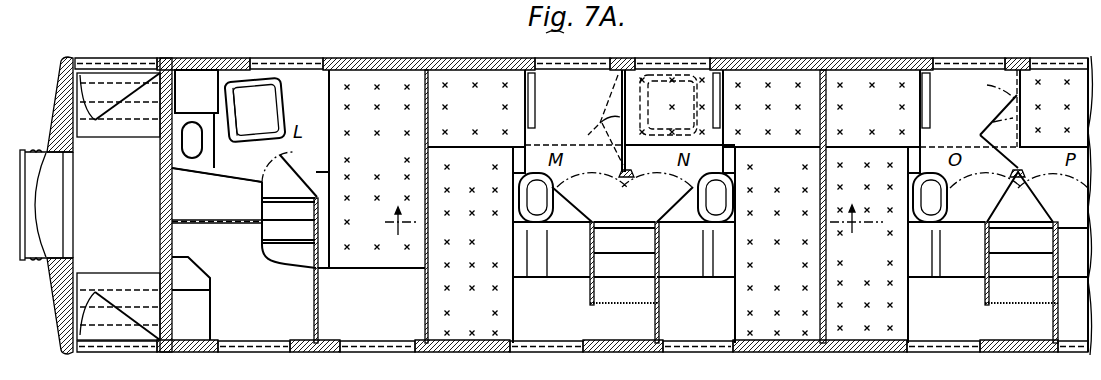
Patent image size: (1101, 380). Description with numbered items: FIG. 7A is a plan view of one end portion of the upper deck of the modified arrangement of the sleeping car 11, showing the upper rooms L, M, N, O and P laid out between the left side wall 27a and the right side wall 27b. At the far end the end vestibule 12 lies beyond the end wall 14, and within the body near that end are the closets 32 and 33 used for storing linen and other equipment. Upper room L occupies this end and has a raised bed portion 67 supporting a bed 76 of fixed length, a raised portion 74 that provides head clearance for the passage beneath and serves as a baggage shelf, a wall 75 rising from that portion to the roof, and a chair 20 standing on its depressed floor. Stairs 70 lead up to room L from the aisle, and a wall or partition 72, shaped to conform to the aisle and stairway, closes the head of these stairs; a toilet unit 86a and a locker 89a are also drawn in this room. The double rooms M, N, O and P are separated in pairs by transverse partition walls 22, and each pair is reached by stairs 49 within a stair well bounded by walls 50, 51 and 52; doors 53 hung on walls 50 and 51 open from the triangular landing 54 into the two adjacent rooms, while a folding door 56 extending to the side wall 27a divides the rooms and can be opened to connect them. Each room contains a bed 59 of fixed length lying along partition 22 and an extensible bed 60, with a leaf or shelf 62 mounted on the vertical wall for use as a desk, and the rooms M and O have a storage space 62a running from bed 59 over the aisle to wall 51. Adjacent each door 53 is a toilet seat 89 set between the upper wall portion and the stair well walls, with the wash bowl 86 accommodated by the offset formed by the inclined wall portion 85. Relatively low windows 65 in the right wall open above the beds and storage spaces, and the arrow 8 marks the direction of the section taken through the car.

The direction arrow / section indicator 8 is at (622, 220).
The car 11 is at (47, 297).
The end vestibule 12 is at (118, 206).
The end wall 14 is at (160, 157).
The chair 20 is at (254, 110).
The transverse partition wall 22 is at (428, 297).
The left side wall 27a is at (417, 59).
The right side wall 27b is at (458, 352).
The closet 32 is at (190, 266).
The closet 33 is at (200, 312).
The stairs 49 is at (640, 263).
The stair well wall 50 is at (597, 238).
The stair well wall 51 is at (660, 292).
The stair well wall 52 is at (824, 317).
The door 53 is at (820, 196).
The stair landing 54 is at (1020, 211).
The folding door 56 is at (992, 115).
The bed of fixed length 59 is at (821, 245).
The extensible bed 60 is at (674, 121).
The leaf or shelf 62 is at (537, 100).
The storage space 62a is at (527, 322).
The low window 65 is at (378, 353).
The raised bed portion 67 is at (380, 314).
The stairs 70 is at (284, 253).
The wall or partition 72 is at (318, 302).
The raised portion 74 is at (217, 188).
The wall 75 is at (212, 225).
The bed of fixed length 76 is at (377, 167).
The inclined wall portion 85 is at (520, 162).
The wash bowl 86 is at (530, 210).
The toilet 86a is at (208, 150).
The toilet seat 89 is at (563, 265).
The locker 89a is at (203, 74).